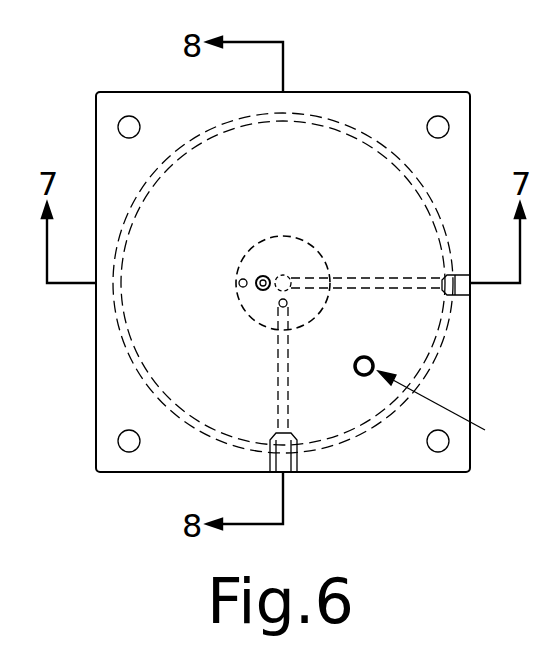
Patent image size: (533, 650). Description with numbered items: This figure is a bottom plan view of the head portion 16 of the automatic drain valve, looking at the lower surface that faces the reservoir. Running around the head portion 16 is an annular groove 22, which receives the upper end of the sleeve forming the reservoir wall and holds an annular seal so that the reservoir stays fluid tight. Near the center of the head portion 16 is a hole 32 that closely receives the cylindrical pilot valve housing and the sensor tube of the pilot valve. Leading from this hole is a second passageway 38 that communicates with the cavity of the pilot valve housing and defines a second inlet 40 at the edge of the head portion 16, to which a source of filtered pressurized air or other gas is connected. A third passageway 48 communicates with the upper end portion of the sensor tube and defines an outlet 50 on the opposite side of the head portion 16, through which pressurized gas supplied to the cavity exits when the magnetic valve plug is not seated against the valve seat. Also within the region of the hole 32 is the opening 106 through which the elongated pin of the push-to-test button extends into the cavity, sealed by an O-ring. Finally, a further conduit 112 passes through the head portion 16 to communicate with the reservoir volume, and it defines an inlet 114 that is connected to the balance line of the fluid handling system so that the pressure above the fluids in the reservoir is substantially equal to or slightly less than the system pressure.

The head portion 16 is at (147, 102).
The annular groove 22 is at (345, 121).
The hole 32 is at (274, 251).
The second passageway 38 is at (291, 394).
The second inlet 40 is at (292, 463).
The third passageway 48 is at (362, 278).
The outlet 50 is at (457, 293).
The opening 106 is at (263, 276).
The conduit 112 is at (450, 408).
The inlet 114 is at (367, 356).